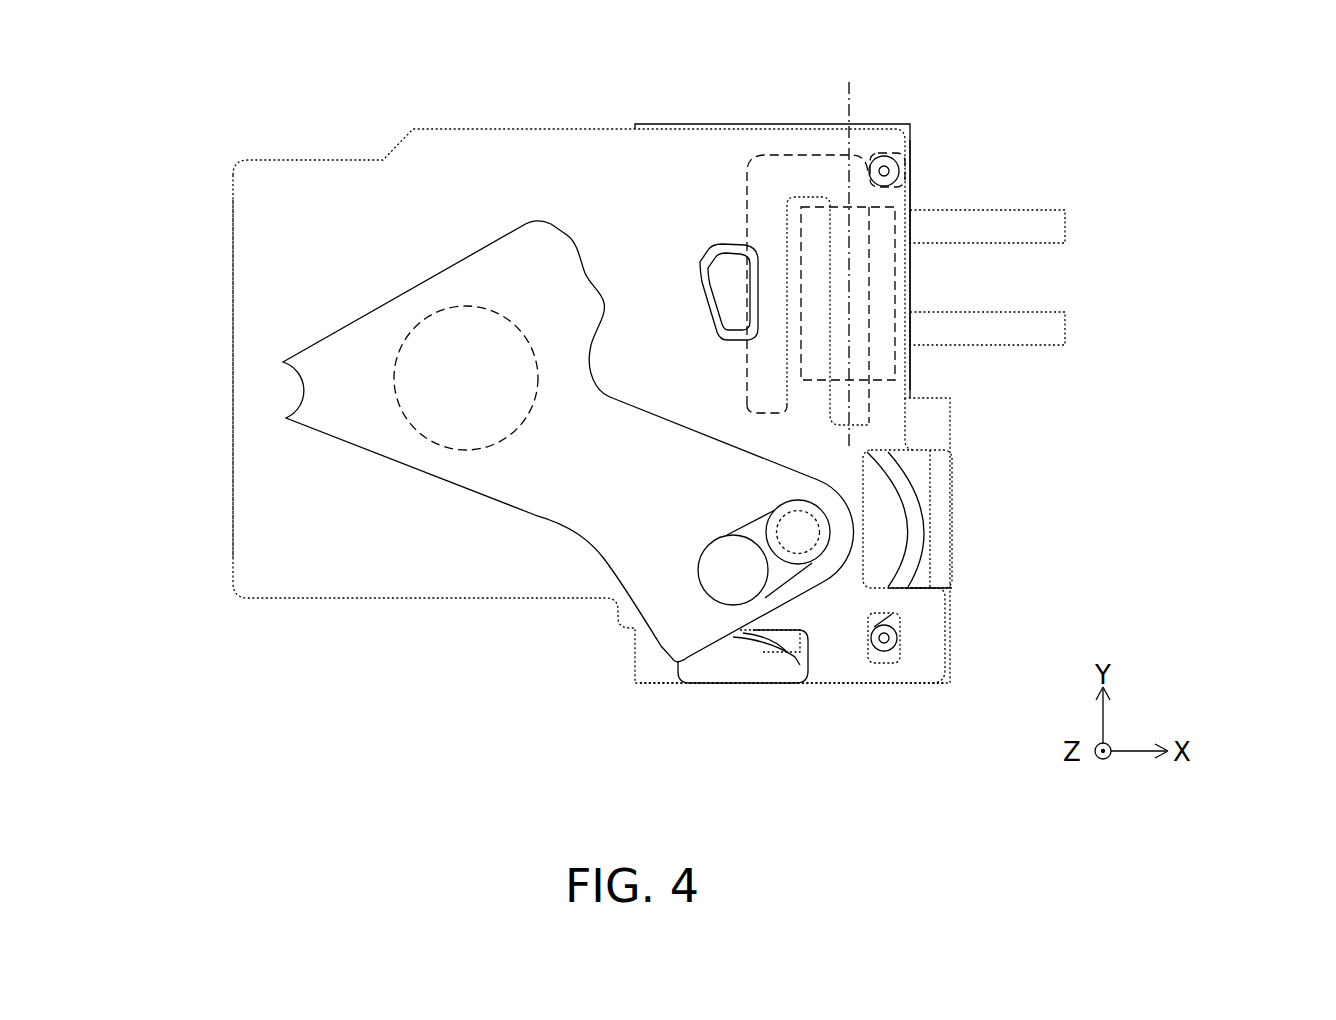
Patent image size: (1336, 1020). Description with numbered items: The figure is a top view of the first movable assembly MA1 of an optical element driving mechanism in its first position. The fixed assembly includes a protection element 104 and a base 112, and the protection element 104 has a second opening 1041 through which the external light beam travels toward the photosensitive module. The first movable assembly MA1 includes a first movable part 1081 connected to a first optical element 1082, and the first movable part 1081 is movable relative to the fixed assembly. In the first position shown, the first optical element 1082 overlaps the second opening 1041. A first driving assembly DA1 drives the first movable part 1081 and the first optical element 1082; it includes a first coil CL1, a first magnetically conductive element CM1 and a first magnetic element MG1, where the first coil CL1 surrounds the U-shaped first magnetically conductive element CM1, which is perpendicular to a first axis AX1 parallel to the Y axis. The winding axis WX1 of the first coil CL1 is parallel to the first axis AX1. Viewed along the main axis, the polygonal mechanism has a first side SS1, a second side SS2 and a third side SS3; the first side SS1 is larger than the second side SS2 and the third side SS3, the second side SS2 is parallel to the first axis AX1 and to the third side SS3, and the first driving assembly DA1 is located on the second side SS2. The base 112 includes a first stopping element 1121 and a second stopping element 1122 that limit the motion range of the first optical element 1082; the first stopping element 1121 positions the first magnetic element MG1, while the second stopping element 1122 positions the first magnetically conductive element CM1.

The protection element 104 is at (318, 185).
The base 112 is at (900, 123).
The second opening 1041 is at (409, 423).
The first movable part 1081 is at (733, 570).
The first optical element 1082 is at (568, 475).
The first stopping element 1121 is at (740, 668).
The second stopping element 1122 is at (731, 280).
The first movable assembly MA1 is at (796, 435).
The first driving assembly DA1 is at (1020, 427).
The first coil CL1 is at (896, 268).
The first magnetically conductive element CM1 is at (784, 152).
The first magnetic element MG1 is at (793, 632).
The winding axis WX1 is at (850, 250).
The first axis AX1 is at (1168, 540).
The first side SS1 is at (554, 718).
The second side SS2 is at (917, 373).
The third side SS3 is at (228, 376).